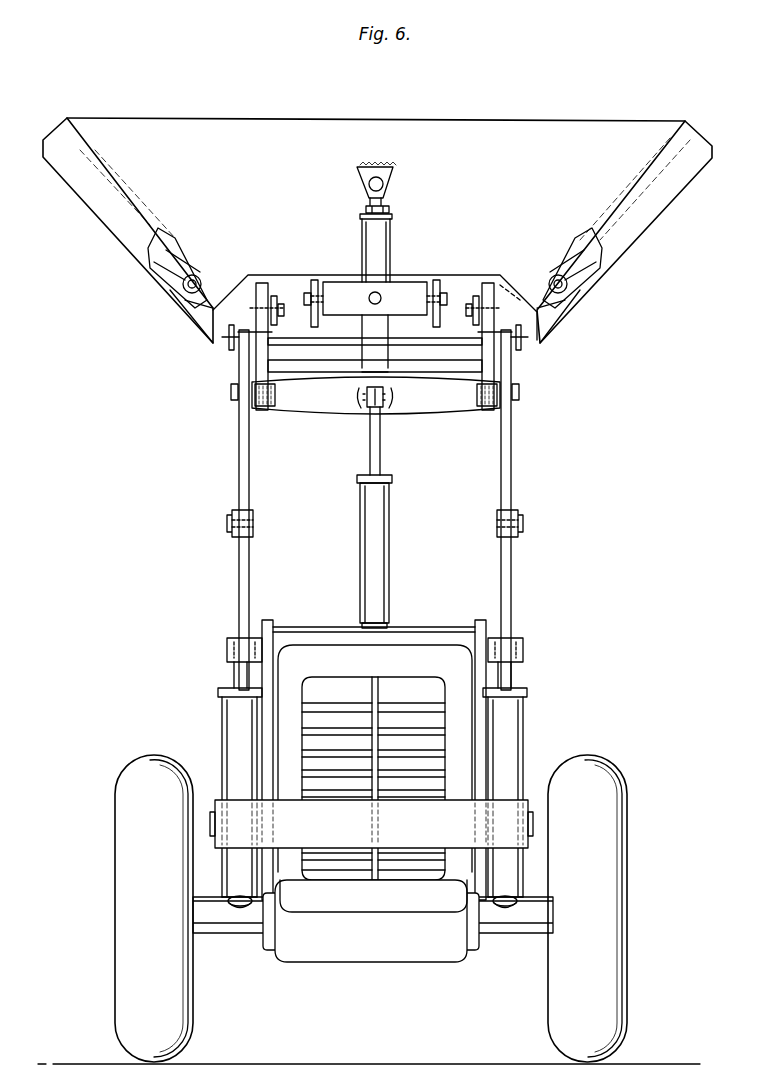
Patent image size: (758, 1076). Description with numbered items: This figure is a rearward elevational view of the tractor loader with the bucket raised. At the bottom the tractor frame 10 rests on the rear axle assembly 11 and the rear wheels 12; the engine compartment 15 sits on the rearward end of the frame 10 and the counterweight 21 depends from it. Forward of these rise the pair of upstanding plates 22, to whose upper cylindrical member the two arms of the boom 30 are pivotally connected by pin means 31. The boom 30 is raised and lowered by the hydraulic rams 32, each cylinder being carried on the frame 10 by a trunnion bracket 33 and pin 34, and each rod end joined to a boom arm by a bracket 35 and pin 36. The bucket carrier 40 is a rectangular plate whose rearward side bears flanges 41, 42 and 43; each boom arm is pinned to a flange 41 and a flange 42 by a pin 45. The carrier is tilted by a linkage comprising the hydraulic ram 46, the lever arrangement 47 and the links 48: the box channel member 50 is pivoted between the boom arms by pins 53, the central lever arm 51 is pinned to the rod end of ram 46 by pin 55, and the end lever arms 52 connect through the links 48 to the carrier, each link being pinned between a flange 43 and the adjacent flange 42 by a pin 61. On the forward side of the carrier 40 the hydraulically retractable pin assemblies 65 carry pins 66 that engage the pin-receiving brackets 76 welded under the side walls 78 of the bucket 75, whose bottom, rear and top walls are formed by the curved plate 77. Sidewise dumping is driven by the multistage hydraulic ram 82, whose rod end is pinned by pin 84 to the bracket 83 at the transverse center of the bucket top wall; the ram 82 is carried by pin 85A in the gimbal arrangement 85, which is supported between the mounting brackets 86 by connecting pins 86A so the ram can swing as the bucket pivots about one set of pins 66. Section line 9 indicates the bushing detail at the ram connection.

The bucket 75 is at (365, 203).
The curved plate 77 is at (146, 108).
The side walls 78 is at (80, 180).
The pin-receiving brackets 76 is at (372, 246).
The pins 66 is at (183, 284).
The hydraulically retractable pin assemblies 65 is at (183, 308).
The pin 61 is at (262, 300).
The flanges 43 is at (274, 296).
The flanges 42 is at (256, 300).
The bucket carrier 40 is at (451, 275).
The mounting brackets 86 is at (379, 297).
The connecting pins 86A is at (309, 300).
The gimbal arrangement 85 is at (399, 283).
The pin 85A is at (373, 318).
The multistage hydraulic ram 82 is at (362, 242).
The bracket 83 is at (376, 175).
The pin 84 is at (390, 184).
The section line 9 is at (376, 170).
The pin 45 is at (229, 340).
The flanges 41 is at (240, 346).
The links 48 is at (377, 325).
The pins 53 is at (233, 400).
The lever arms 52 is at (285, 443).
The box channel member 50 is at (376, 416).
The lever arrangement 47 is at (334, 421).
The lever arm 51 is at (362, 392).
The pin 55 is at (390, 402).
The boom 30 is at (373, 510).
The bracket 35 is at (228, 517).
The pin 36 is at (230, 528).
The hydraulic ram 46 is at (360, 525).
The upstanding plates 22 is at (267, 620).
The engine compartment 15 is at (333, 650).
The pin means 31 is at (227, 650).
The hydraulic rams 32 is at (222, 718).
The trunnion bracket 33 is at (238, 806).
The pin 34 is at (212, 835).
The frame 10 is at (374, 814).
The rear wheels 12 is at (118, 857).
The counterweight 21 is at (370, 912).
The rear axle assembly 11 is at (396, 960).